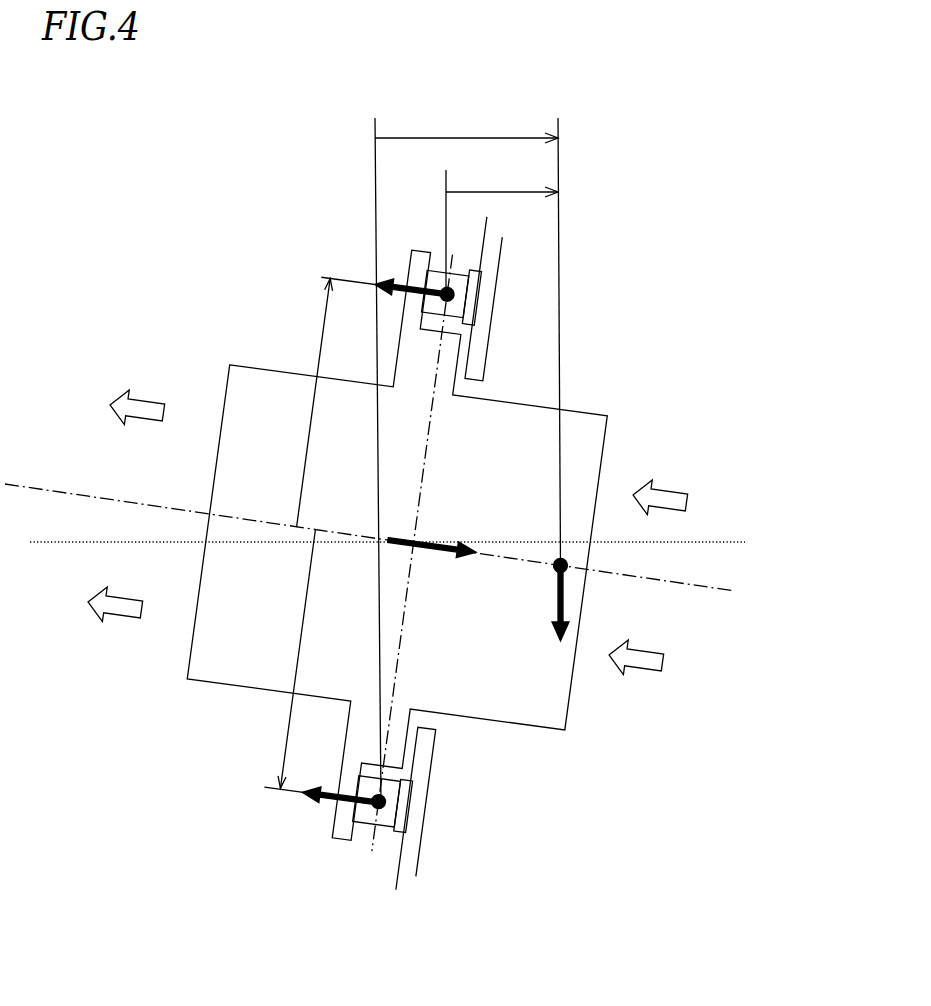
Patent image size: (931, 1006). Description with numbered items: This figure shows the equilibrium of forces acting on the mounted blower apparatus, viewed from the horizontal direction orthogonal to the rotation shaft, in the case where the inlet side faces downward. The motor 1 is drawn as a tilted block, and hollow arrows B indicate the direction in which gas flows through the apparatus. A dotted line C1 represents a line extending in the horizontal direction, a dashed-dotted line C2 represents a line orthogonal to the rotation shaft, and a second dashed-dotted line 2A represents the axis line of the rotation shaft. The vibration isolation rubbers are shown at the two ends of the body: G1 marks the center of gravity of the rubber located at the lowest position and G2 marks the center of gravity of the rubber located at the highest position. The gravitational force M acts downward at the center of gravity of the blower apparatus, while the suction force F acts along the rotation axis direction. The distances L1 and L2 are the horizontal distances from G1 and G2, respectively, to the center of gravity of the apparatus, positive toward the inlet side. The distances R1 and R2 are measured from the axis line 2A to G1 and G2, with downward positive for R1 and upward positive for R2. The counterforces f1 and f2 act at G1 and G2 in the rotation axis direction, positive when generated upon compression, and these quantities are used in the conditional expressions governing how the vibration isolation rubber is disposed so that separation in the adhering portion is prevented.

The motor 1 is at (250, 363).
The axis line of the rotation shaft 2A is at (703, 586).
The direction in which gas flows B is at (640, 668).
The line extending in the horizontal direction C1 is at (712, 540).
The line orthogonal to the rotation shaft C2 is at (427, 470).
The center of gravity of the vibration isolation rubber located at the lowest positi G1 is at (387, 807).
The center of gravity of the vibration isolation rubber located at the highest posit G2 is at (442, 290).
The horizontal distance from G1 to the center of gravity of the blower apparatus L1 is at (468, 452).
The horizontal distance from G2 to the center of gravity of the blower apparatus L2 is at (502, 225).
The distance to G1 from the axis line of the rotation shaft R1 is at (324, 664).
The distance to G2 from the axis line of the rotation shaft R2 is at (355, 408).
The counterforce from G1 in the rotation axis direction f1 is at (337, 811).
The counterforce from G2 in the rotation axis direction f2 is at (411, 302).
The suction force of the blower apparatus F is at (432, 539).
The gravitational force applied to the blower apparatus M is at (548, 600).